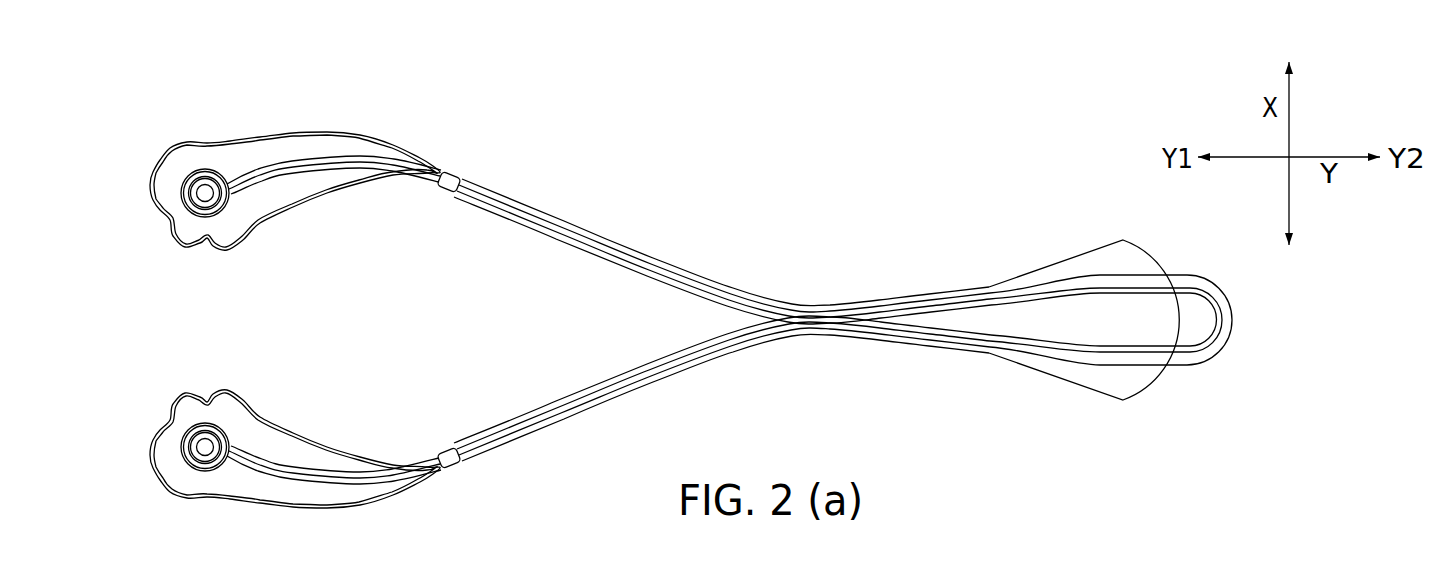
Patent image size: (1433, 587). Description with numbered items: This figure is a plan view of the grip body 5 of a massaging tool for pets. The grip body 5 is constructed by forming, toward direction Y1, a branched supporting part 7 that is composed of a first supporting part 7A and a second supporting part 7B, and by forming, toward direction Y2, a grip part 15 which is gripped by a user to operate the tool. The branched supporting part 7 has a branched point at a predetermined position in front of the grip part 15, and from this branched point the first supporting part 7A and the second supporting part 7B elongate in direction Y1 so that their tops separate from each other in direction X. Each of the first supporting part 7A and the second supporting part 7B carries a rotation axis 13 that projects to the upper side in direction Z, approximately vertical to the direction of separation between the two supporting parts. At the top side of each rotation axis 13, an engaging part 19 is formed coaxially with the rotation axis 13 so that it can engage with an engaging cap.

The grip body 5 is at (853, 222).
The branched supporting part 7 is at (682, 135).
The first supporting part 7A is at (433, 171).
The second supporting part 7B is at (443, 455).
The rotation axis 13 is at (204, 184).
The grip part 15 is at (985, 288).
The engaging part 19 is at (200, 190).